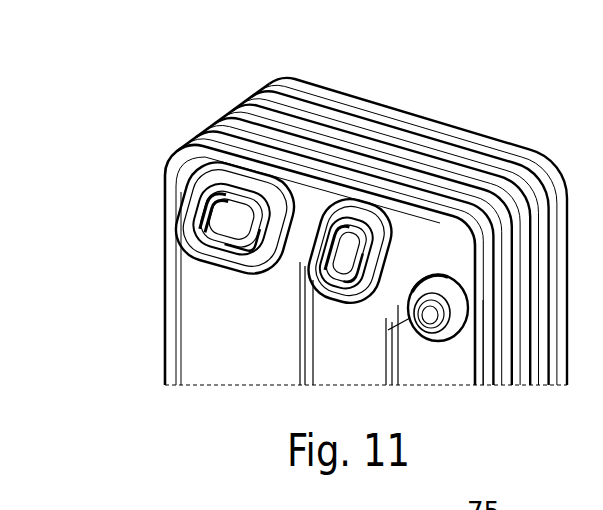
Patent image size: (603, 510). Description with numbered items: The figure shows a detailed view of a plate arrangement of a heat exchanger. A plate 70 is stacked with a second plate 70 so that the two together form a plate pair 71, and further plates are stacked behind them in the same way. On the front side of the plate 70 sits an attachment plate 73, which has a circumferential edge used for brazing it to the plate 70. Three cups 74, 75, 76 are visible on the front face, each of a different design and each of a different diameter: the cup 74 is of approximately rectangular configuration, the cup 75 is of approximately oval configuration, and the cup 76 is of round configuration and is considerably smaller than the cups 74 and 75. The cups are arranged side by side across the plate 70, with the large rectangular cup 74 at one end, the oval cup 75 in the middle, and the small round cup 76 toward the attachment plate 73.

The plate 70 is at (322, 160).
The plate pair 71 is at (193, 141).
The attachment plate 73 is at (472, 352).
The cup 74 is at (193, 217).
The cup 75 is at (378, 220).
The cup 76 is at (447, 287).